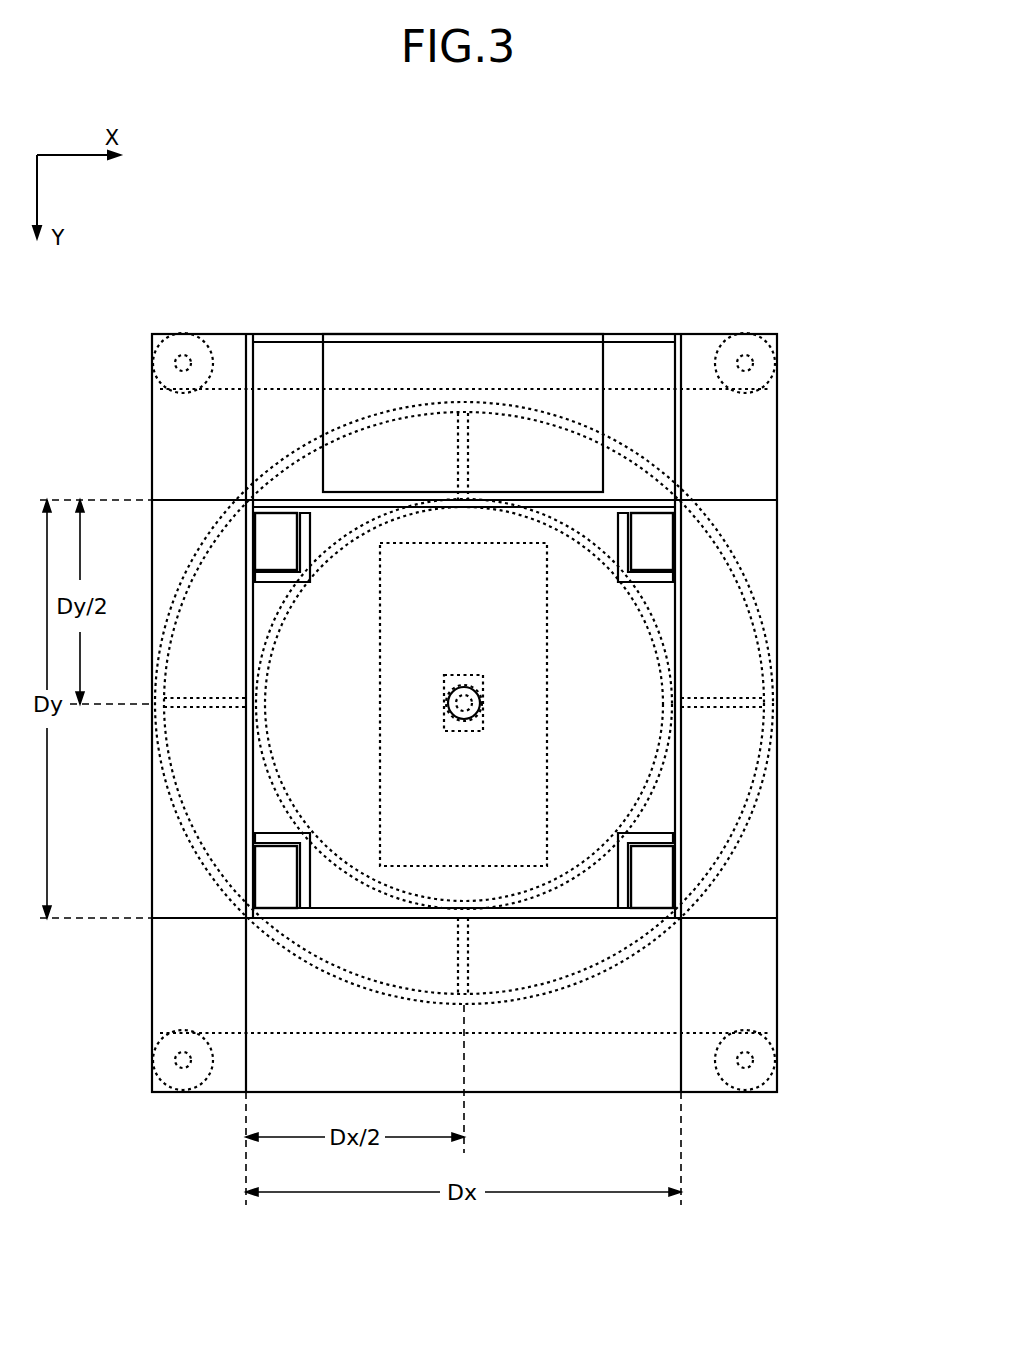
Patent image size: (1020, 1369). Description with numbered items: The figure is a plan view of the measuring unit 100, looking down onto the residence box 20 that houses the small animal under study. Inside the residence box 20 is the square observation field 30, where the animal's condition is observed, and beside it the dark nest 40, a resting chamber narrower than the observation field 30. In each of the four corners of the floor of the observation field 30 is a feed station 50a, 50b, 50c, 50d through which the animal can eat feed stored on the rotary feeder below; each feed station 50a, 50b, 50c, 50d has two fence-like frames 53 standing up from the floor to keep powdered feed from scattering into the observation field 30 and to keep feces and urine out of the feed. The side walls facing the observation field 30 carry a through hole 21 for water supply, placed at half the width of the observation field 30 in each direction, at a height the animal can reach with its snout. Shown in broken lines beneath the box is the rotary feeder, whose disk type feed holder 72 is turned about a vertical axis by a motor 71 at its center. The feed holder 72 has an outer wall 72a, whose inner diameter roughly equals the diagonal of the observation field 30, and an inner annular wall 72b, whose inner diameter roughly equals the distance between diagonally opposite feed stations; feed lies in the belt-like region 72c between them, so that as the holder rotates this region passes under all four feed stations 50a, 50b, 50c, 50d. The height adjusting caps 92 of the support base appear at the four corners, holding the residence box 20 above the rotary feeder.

The measuring unit 100 is at (746, 256).
The residence box 20 is at (258, 334).
The through hole for water supply 21 is at (239, 717).
The observation field 30 is at (366, 655).
The nest 40 is at (540, 352).
The feed station 50a is at (276, 530).
The feed station 50b is at (649, 535).
The feed station 50c is at (650, 878).
The feed station 50d is at (275, 879).
The fence-like frame 53 is at (268, 585).
The motor 71 is at (548, 718).
The disk type feed holder 72 is at (500, 703).
The outer wall 72a is at (767, 725).
The inner annular wall 72b is at (653, 625).
The belt-like region 72c is at (740, 678).
The height adjusting cap 92 is at (155, 363).